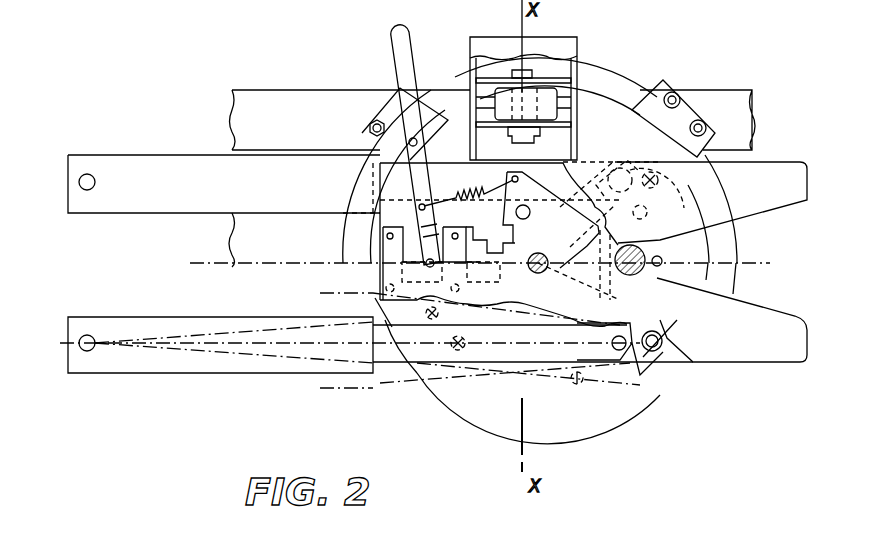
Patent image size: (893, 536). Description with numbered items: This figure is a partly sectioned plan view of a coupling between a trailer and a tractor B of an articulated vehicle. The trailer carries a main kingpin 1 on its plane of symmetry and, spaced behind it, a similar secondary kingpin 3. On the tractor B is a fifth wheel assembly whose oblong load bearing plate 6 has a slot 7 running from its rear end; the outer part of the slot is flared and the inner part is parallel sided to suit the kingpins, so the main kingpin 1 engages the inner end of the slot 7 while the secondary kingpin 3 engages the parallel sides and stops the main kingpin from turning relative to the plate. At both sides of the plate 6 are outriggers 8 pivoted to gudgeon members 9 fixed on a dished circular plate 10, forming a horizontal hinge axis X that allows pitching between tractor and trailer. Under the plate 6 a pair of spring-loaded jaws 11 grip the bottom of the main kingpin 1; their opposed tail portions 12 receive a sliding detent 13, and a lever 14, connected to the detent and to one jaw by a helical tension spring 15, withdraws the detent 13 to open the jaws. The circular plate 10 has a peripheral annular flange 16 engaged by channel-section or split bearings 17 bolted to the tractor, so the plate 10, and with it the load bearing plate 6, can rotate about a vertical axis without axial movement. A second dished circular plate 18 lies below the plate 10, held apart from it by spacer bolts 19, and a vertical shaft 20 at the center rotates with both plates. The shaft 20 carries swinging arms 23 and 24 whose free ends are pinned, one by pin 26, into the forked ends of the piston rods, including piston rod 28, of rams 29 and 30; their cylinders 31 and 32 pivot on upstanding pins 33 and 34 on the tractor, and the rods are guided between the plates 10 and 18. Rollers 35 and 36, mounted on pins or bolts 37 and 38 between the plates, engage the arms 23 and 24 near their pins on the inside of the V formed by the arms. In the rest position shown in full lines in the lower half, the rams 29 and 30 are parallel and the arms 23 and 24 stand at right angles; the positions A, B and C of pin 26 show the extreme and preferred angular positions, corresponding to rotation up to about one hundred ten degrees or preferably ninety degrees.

The tractor B is at (257, 90).
The main kingpin 1 is at (528, 255).
The secondary kingpin 3 is at (636, 278).
The load bearing plate 6 is at (767, 170).
The slot 7 is at (770, 212).
The outriggers 8 is at (572, 46).
The gudgeon members 9 is at (548, 112).
The dished circular plate 10 is at (454, 127).
The jaws 11 is at (564, 212).
The tail portions 12 is at (488, 232).
The sliding detent 13 is at (408, 242).
The lever 14 is at (392, 58).
The helical tension spring 15 is at (469, 186).
The annular flange 16 is at (622, 84).
The bearings 17 is at (678, 108).
The second dished circular plate 18 is at (612, 407).
The spacer bolts 19 is at (658, 256).
The vertical shaft 20 is at (520, 244).
The swinging arm 23 is at (620, 152).
The swinging arm 24 is at (640, 375).
The pin 26 is at (620, 352).
The piston rod 28 is at (510, 353).
The ram 29 is at (206, 146).
The ram 30 is at (218, 377).
The cylinder 31 is at (135, 164).
The cylinder 32 is at (138, 374).
The upstanding pin 33 is at (88, 174).
The upstanding pin 34 is at (87, 353).
The roller 35 is at (670, 200).
The roller 36 is at (665, 344).
The pin or bolt 37 is at (660, 182).
The pin or bolt 38 is at (657, 337).